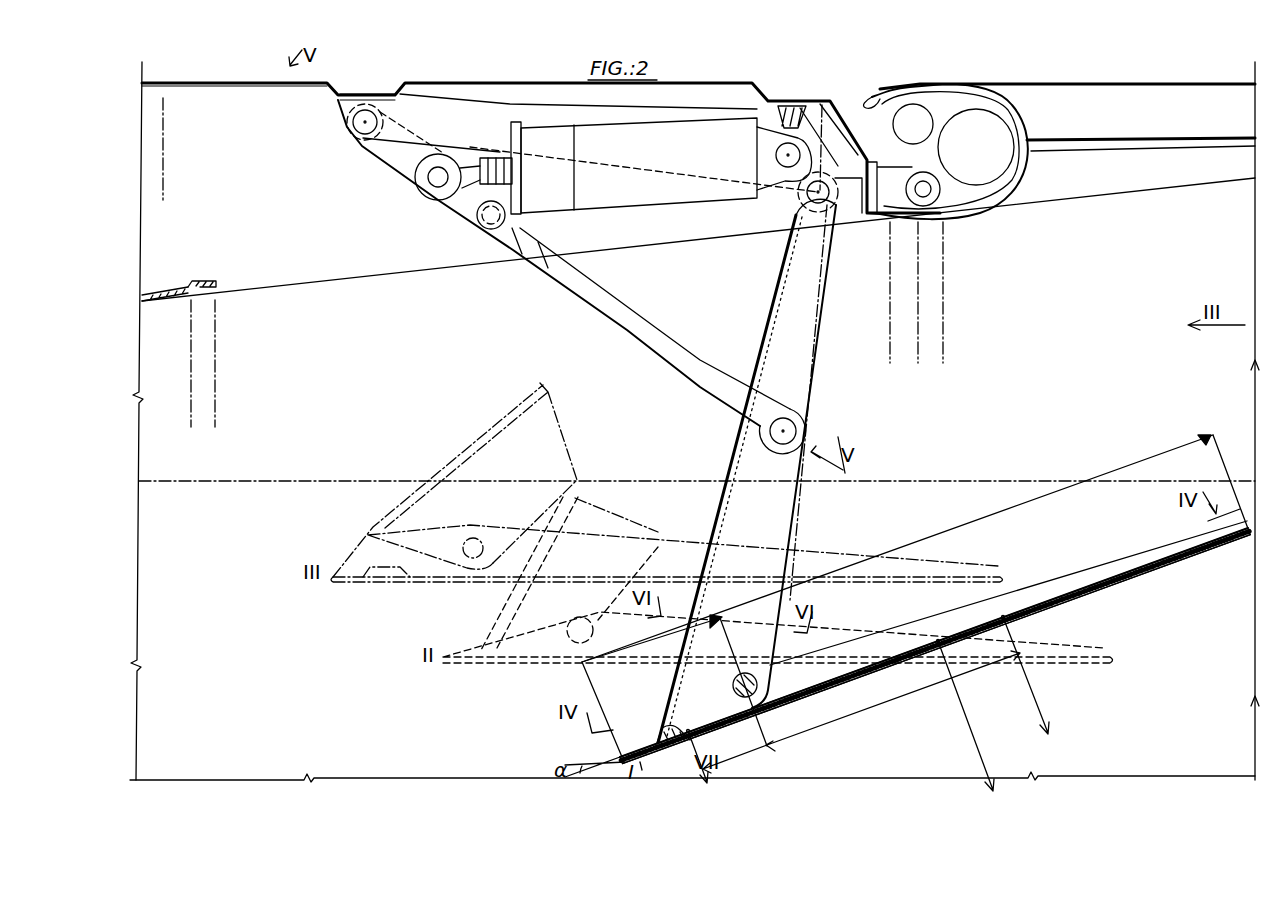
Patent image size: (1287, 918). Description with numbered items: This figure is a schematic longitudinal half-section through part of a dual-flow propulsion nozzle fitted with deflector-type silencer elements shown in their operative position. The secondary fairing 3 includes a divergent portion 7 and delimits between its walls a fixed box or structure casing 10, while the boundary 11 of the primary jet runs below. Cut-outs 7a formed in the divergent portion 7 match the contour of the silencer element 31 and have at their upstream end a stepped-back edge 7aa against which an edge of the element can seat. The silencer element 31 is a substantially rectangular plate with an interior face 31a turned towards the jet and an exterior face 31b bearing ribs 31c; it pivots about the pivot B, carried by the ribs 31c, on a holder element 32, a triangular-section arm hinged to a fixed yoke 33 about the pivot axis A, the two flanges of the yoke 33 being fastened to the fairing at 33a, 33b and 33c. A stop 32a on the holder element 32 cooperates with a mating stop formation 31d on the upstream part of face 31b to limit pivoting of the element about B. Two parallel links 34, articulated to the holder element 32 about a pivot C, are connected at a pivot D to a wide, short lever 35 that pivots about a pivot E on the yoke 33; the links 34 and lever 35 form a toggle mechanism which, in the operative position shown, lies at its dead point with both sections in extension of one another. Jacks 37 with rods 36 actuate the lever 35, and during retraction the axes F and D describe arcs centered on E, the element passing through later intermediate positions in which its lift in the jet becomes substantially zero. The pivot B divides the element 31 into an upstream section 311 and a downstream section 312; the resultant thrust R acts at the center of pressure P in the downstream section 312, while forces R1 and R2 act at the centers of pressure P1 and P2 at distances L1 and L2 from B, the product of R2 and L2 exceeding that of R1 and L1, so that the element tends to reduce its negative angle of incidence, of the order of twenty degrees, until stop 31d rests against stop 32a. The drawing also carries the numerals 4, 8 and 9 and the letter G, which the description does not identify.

The secondary fairing 3 is at (180, 74).
The roof panel 4 is at (232, 80).
The divergent portion 7 is at (178, 301).
The cut-outs 7a is at (269, 282).
The stepped-back edge 7aa is at (197, 283).
The drive housing / arm 8 is at (1063, 102).
The bearing 9 is at (927, 194).
The structure casing 10 is at (229, 183).
The boundary of the primary jet 11 is at (265, 472).
The silencer element 31 is at (1203, 571).
The interior face 31a is at (1140, 586).
The exterior face 31b is at (1115, 575).
The ribs 31c is at (1025, 592).
The stop formation 31d is at (665, 774).
The holder element 32 is at (812, 333).
The stop 32a is at (650, 723).
The yoke 33 is at (428, 110).
The fastening point 33a is at (878, 160).
The fastening point 33b is at (793, 100).
The fastening point 33c is at (357, 92).
The links 34 is at (657, 340).
The lever 35 is at (397, 160).
The rods 36 is at (500, 155).
The jacks 37 is at (618, 186).
The upstream section 311 is at (651, 640).
The downstream section 312 is at (897, 548).
The pivot axis A is at (823, 200).
The pivot B is at (743, 682).
The pivot C is at (800, 427).
The pivot D is at (485, 230).
The pivot E is at (352, 126).
The axis F is at (442, 168).
The pivot G is at (786, 162).
The center of pressure P is at (939, 633).
The center of pressure of upstream section P1 is at (701, 716).
The center of pressure of downstream section P2 is at (1010, 606).
The resultant thrust R is at (976, 716).
The pressure force on upstream section R1 is at (713, 760).
The pressure force on downstream section R2 is at (1044, 680).
The distance L1 is at (735, 758).
The distance L2 is at (893, 701).